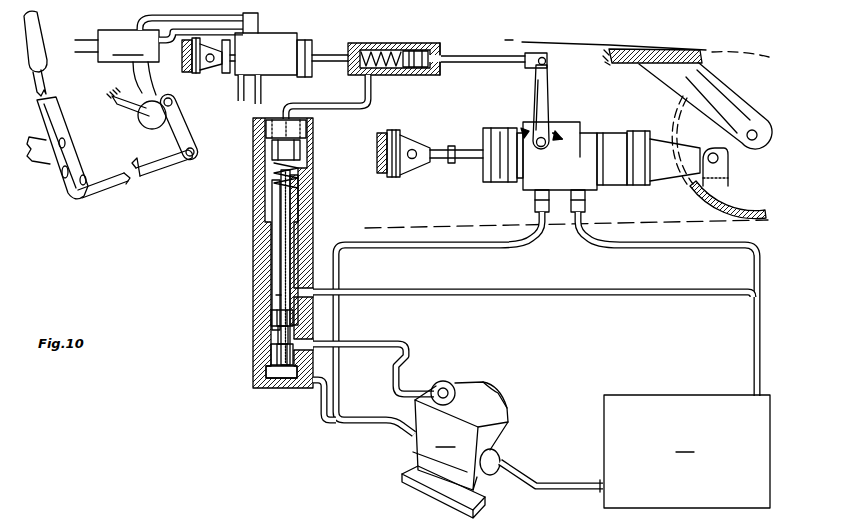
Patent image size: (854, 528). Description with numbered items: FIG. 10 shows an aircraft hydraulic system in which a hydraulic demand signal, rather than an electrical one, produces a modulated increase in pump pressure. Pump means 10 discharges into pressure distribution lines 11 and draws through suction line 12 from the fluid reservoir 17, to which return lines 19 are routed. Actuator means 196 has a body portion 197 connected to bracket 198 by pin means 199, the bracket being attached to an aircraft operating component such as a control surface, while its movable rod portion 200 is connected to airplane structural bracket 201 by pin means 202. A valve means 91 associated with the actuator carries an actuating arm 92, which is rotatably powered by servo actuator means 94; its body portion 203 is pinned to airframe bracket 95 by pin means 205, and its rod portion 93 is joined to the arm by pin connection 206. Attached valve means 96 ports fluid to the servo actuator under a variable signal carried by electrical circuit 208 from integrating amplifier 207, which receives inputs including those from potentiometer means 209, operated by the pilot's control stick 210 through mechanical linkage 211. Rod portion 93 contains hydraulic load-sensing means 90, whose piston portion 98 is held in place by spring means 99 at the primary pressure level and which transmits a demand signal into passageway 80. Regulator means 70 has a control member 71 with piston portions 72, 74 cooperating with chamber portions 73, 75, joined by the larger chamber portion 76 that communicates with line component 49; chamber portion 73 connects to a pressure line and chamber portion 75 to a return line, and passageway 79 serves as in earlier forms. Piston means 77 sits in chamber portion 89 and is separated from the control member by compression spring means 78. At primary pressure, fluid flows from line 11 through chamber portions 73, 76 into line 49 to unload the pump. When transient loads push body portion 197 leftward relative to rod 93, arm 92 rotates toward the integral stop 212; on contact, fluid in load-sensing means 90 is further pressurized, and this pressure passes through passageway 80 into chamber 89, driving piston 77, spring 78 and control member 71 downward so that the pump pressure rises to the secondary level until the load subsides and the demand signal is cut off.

The pump means 10 is at (455, 449).
The pressure distribution line 11 is at (242, 100).
The suction line 12 is at (556, 482).
The fluid reservoir 17 is at (687, 451).
The return line 19 is at (262, 96).
The line component 49 is at (388, 339).
The regulator means 70 is at (315, 206).
The control member 71 is at (253, 267).
The piston portion 72 is at (264, 359).
The chamber portion 73 is at (282, 378).
The piston portion 74 is at (270, 319).
The chamber portion 75 is at (297, 265).
The chamber portion 76 is at (264, 340).
The piston means 77 is at (256, 138).
The compression spring means 78 is at (265, 180).
The passageway 79 is at (276, 295).
The passageway 80 is at (333, 110).
The chamber portion 89 is at (302, 152).
The hydraulic load-sensing means 90 is at (396, 43).
The valve means 91 is at (556, 122).
The actuating arm 92 is at (549, 98).
The rod portion 93 is at (332, 53).
The servo actuator means 94 is at (272, 50).
The airframe bracket 95 is at (186, 44).
The valve means 96 is at (258, 18).
The piston portion 98 is at (415, 72).
The spring means 99 is at (358, 44).
The actuator means 196 is at (607, 197).
The body portion 197 is at (652, 146).
The bracket 198 is at (724, 177).
The pin means 199 is at (720, 160).
The rod portion 200 is at (438, 150).
The structural bracket 201 is at (394, 176).
The pin means 202 is at (419, 162).
The body portion 203 is at (228, 74).
The pin means 205 is at (210, 64).
The pin connection 206 is at (547, 56).
The integrating amplifier 207 is at (117, 46).
The electrical circuit 208 is at (146, 17).
The potentiometer means 209 is at (156, 128).
The pilot's control stick 210 is at (55, 108).
The mechanical linkage 211 is at (150, 177).
The stop 212 is at (565, 133).